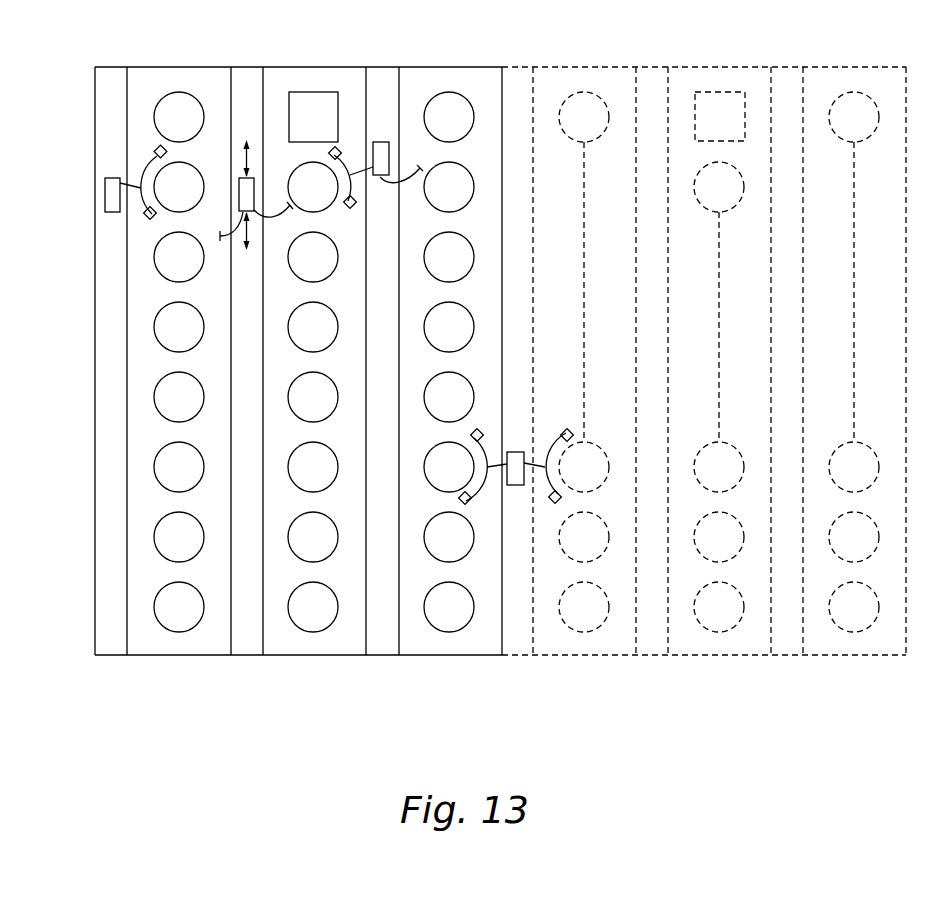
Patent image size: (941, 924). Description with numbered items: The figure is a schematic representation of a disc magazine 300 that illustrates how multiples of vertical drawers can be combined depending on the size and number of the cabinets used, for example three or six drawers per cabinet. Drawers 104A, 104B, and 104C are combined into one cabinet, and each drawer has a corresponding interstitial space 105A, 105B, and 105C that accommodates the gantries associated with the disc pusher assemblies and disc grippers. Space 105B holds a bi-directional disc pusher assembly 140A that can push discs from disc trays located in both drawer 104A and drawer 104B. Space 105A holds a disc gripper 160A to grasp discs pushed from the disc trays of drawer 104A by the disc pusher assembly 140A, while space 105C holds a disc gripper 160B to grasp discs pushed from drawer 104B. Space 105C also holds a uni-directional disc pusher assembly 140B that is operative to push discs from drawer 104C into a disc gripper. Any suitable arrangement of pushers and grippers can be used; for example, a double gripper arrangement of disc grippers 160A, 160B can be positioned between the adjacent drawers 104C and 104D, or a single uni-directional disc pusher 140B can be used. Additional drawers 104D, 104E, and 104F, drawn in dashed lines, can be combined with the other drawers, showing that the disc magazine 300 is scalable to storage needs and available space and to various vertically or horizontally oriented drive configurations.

The disc magazine 300 is at (543, 735).
The interstitial space 105A is at (112, 645).
The drawer 104A is at (178, 645).
The interstitial space 105B is at (247, 645).
The drawer 104B is at (313, 645).
The interstitial space 105C is at (380, 645).
The drawer 104C is at (448, 645).
The drawer 104D is at (583, 645).
The drawer 104E is at (718, 645).
The drawer 104F is at (853, 645).
The disc gripper 160A is at (101, 163).
The bi-directional disc pusher assembly 140A is at (240, 178).
The uni-directional disc pusher assembly 140B is at (380, 142).
The disc gripper 160B is at (358, 170).